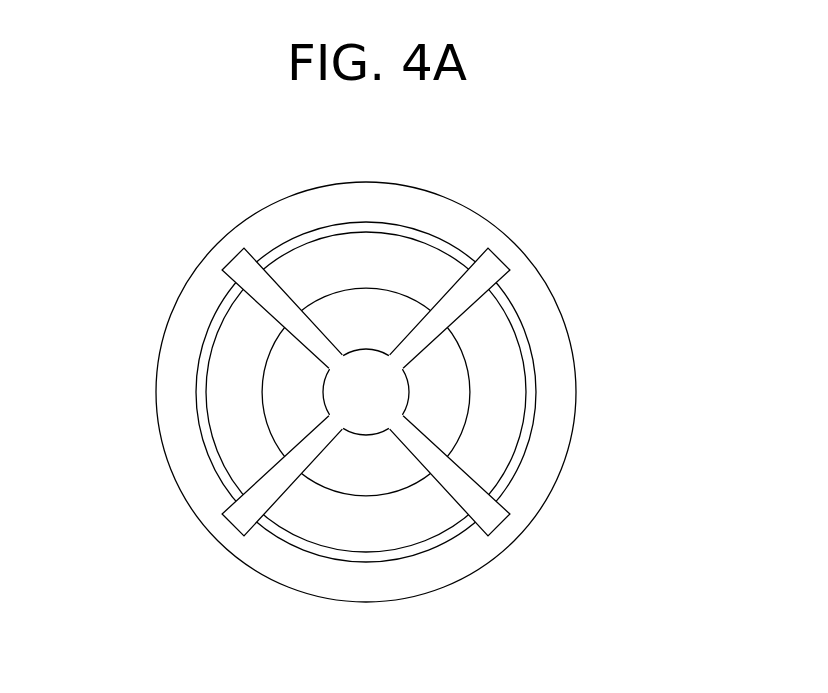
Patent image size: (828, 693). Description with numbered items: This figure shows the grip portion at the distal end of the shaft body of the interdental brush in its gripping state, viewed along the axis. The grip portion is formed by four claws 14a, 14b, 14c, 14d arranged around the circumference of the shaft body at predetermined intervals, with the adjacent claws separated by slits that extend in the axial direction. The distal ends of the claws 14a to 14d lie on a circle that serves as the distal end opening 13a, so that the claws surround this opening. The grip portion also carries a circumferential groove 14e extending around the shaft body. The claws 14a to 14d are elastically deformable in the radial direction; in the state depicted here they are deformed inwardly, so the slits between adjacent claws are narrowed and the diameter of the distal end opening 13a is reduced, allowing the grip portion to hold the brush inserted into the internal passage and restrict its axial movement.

The distal end opening 13a is at (363, 390).
The claw 14a is at (288, 387).
The claw 14b is at (360, 480).
The claw 14c is at (445, 385).
The claw 14d is at (372, 306).
The circumferential groove 14e is at (408, 550).